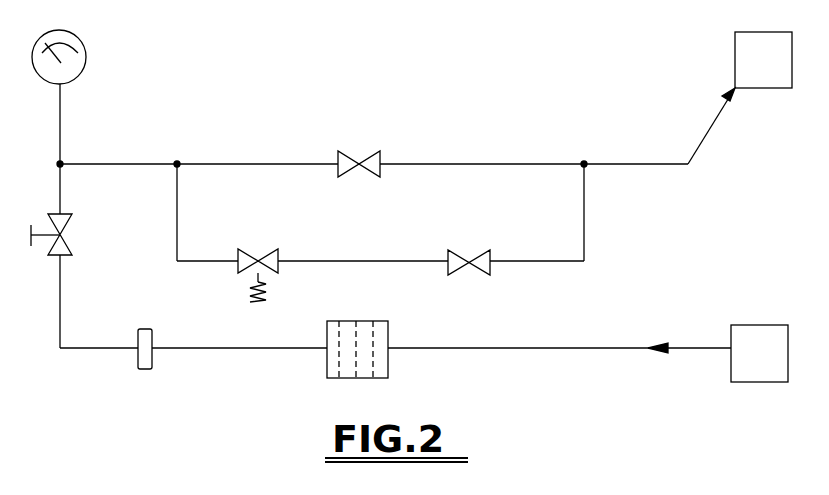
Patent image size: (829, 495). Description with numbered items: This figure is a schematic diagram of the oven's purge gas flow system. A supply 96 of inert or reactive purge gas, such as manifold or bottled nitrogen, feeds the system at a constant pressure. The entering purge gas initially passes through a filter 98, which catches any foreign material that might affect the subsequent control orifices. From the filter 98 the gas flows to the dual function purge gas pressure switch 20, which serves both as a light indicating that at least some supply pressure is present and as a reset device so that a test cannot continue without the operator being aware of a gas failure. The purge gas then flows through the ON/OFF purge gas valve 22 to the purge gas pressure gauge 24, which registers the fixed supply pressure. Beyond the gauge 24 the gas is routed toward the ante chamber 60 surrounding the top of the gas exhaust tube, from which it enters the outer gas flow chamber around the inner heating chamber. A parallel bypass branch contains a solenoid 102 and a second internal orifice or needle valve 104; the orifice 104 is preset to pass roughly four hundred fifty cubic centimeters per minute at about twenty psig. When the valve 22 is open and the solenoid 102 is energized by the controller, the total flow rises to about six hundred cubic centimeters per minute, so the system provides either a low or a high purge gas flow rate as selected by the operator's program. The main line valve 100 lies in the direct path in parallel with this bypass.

The purge gas pressure switch 20 is at (138, 332).
The ON/OFF purge gas valve 22 is at (68, 229).
The purge gas pressure gauge 24 is at (86, 45).
The ante chamber 60 is at (735, 68).
The purge gas supply 96 is at (745, 325).
The filter 98 is at (388, 336).
The main line valve 100 is at (363, 158).
The solenoid 102 is at (262, 256).
The second internal orifice or needle valve 104 is at (472, 257).